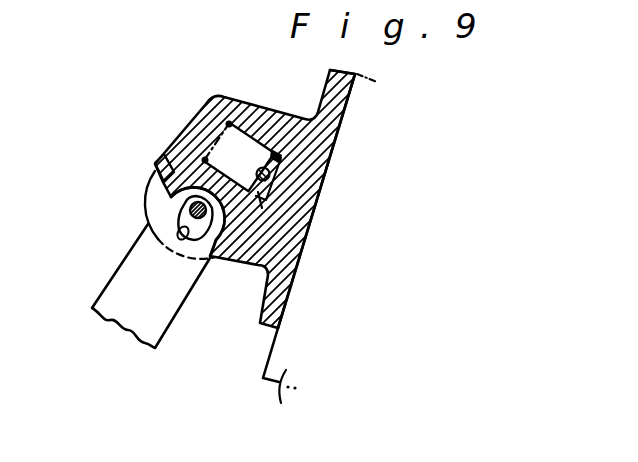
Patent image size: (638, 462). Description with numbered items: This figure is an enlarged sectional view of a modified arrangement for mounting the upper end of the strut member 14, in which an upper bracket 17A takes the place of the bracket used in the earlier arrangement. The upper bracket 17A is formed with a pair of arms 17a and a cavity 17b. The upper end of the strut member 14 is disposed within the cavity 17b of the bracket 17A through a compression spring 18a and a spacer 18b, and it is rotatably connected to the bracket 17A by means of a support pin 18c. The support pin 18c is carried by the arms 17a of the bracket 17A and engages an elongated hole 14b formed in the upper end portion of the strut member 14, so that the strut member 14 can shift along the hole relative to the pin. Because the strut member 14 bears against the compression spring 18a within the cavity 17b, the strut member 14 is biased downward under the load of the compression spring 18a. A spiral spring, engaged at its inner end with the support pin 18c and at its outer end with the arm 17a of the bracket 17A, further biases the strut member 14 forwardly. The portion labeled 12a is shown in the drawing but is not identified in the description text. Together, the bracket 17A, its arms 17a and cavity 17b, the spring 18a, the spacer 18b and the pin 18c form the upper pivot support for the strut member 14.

The upper bracket 17A is at (209, 91).
The arms 17a is at (150, 196).
The cavity 17b is at (317, 187).
The compression spring 18a is at (217, 143).
The spacer 18b is at (300, 235).
The support pin 18c is at (198, 208).
The strut member 14 is at (165, 346).
The elongated hole 14b is at (191, 216).
The frame portion 12a is at (279, 383).